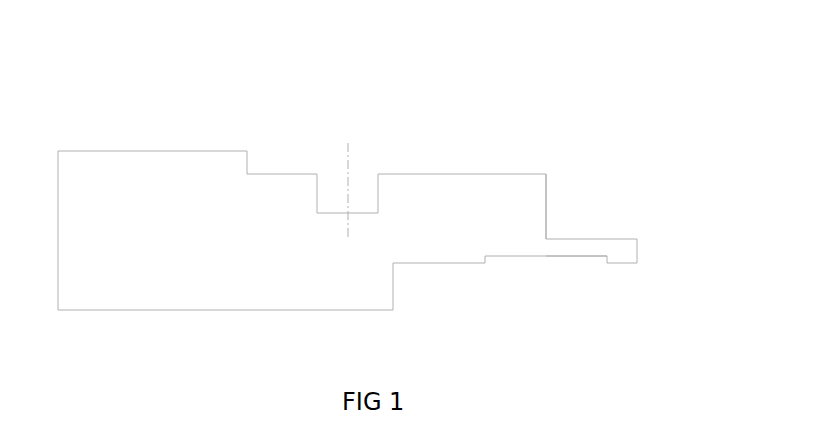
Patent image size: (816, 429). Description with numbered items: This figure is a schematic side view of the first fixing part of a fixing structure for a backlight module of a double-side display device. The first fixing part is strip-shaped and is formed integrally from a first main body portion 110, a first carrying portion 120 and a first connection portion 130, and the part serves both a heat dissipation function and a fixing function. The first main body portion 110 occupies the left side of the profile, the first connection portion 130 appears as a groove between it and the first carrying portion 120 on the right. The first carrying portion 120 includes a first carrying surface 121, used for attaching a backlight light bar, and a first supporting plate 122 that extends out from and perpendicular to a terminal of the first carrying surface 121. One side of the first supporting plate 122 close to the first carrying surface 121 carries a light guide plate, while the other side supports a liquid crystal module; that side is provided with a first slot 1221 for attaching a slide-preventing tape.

The first main body portion 110 is at (122, 298).
The first carrying portion 120 is at (530, 153).
The first carrying surface 121 is at (546, 209).
The first supporting plate 122 is at (625, 254).
The first slot 1221 is at (546, 256).
The first connection portion 130 is at (308, 148).